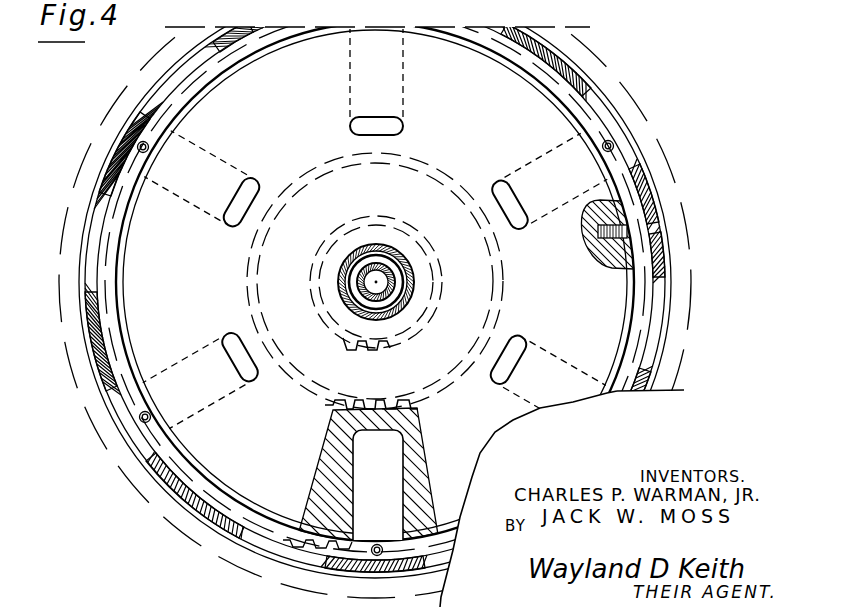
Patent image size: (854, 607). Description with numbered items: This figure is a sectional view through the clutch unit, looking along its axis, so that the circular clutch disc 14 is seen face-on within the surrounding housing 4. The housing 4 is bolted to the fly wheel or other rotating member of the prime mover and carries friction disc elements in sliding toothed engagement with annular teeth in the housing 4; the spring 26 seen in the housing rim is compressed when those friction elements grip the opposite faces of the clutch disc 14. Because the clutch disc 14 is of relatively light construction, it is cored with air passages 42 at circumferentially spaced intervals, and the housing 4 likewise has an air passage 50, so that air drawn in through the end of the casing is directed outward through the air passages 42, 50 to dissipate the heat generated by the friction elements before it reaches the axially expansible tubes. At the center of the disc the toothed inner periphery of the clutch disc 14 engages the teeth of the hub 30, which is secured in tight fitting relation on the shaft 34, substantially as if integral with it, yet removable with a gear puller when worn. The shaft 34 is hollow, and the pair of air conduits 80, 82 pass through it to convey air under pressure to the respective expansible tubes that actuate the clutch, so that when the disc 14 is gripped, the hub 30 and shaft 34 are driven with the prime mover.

The housing 4 is at (586, 70).
The air passage 50 is at (598, 100).
The spring 26 is at (612, 142).
The clutch disc 14 is at (623, 299).
The air passage 42 is at (537, 212).
The hub 30 is at (397, 393).
The air conduit 82 is at (392, 285).
The air conduit 80 is at (402, 300).
The shaft 34 is at (408, 324).